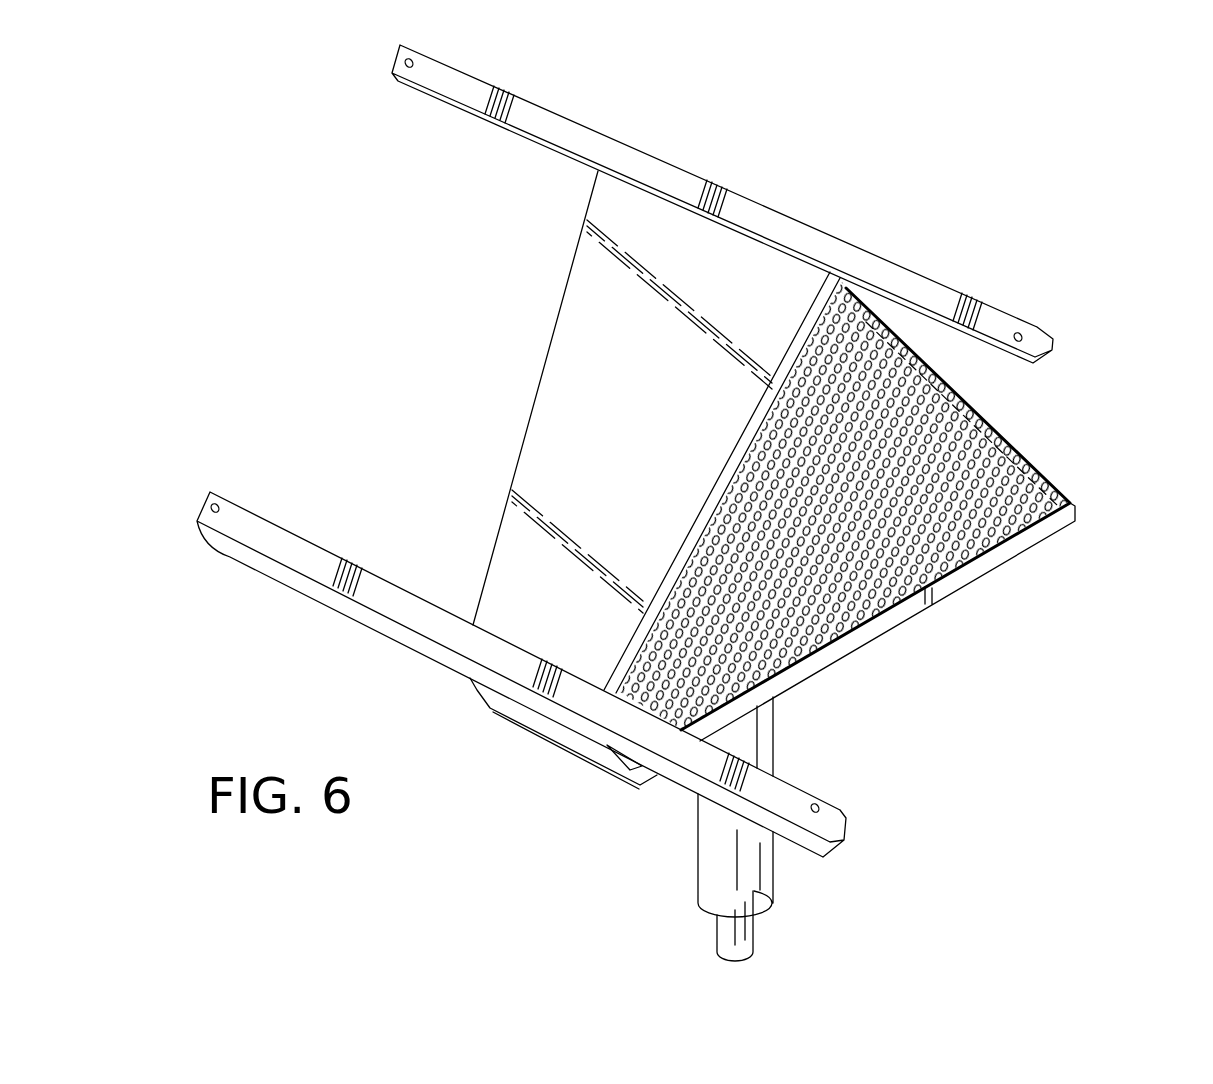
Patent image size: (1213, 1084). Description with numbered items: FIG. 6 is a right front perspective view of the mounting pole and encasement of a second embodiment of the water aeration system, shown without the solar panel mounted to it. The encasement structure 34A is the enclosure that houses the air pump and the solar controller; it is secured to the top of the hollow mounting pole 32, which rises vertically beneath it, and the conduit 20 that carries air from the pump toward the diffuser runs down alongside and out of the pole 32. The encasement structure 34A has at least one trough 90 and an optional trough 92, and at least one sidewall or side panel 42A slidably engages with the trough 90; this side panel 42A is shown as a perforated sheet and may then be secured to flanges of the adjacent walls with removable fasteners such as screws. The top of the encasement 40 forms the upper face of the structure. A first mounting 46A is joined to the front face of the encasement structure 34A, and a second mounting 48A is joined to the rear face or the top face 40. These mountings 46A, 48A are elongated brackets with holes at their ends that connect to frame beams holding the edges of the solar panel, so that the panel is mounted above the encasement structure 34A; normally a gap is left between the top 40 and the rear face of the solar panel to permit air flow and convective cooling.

The frame mounting for solar panel 48A is at (576, 135).
The frame mounting for solar panel 46A is at (277, 545).
The top of encasement 40 is at (682, 252).
The optional trough 92 is at (813, 330).
The side panel of encasement 42A is at (890, 575).
The trough 90 is at (1040, 533).
The encasement 34A is at (843, 416).
The hollow mounting pole 32 is at (713, 842).
The conduit from pump to diffuser 20 is at (728, 930).